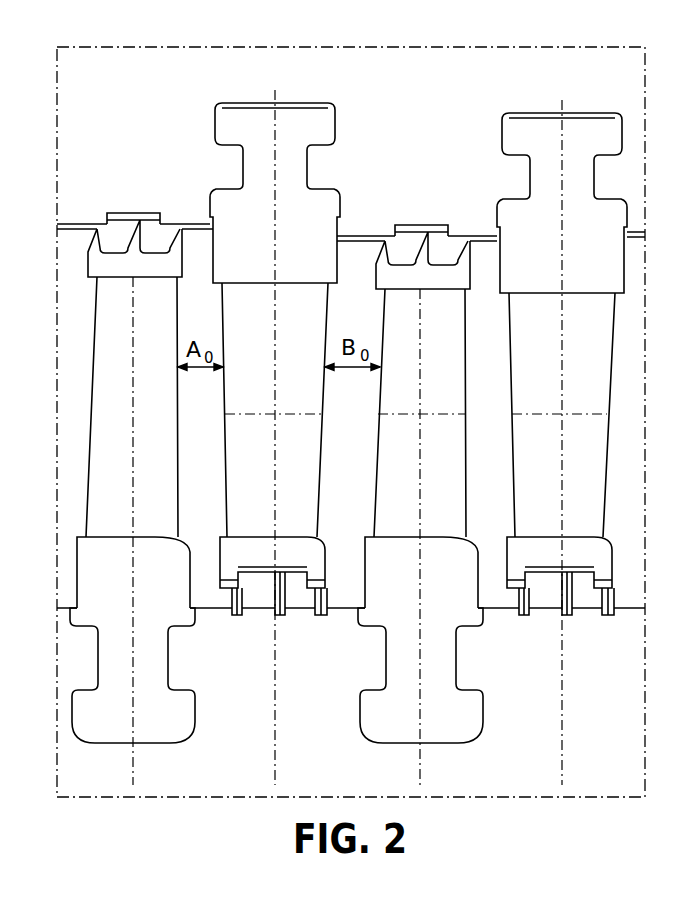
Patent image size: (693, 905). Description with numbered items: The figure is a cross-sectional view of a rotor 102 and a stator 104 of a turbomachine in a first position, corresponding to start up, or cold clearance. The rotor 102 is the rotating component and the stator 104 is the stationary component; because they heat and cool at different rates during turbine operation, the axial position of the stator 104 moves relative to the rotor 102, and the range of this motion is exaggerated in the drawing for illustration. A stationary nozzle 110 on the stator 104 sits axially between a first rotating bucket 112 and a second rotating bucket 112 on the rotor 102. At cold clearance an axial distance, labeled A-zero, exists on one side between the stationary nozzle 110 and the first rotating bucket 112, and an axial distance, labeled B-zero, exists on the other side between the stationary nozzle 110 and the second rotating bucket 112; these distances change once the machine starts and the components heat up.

The rotor 102 is at (264, 707).
The stator 104 is at (422, 145).
The stationary nozzle 110 is at (269, 405).
The rotating bucket 112 is at (133, 475).